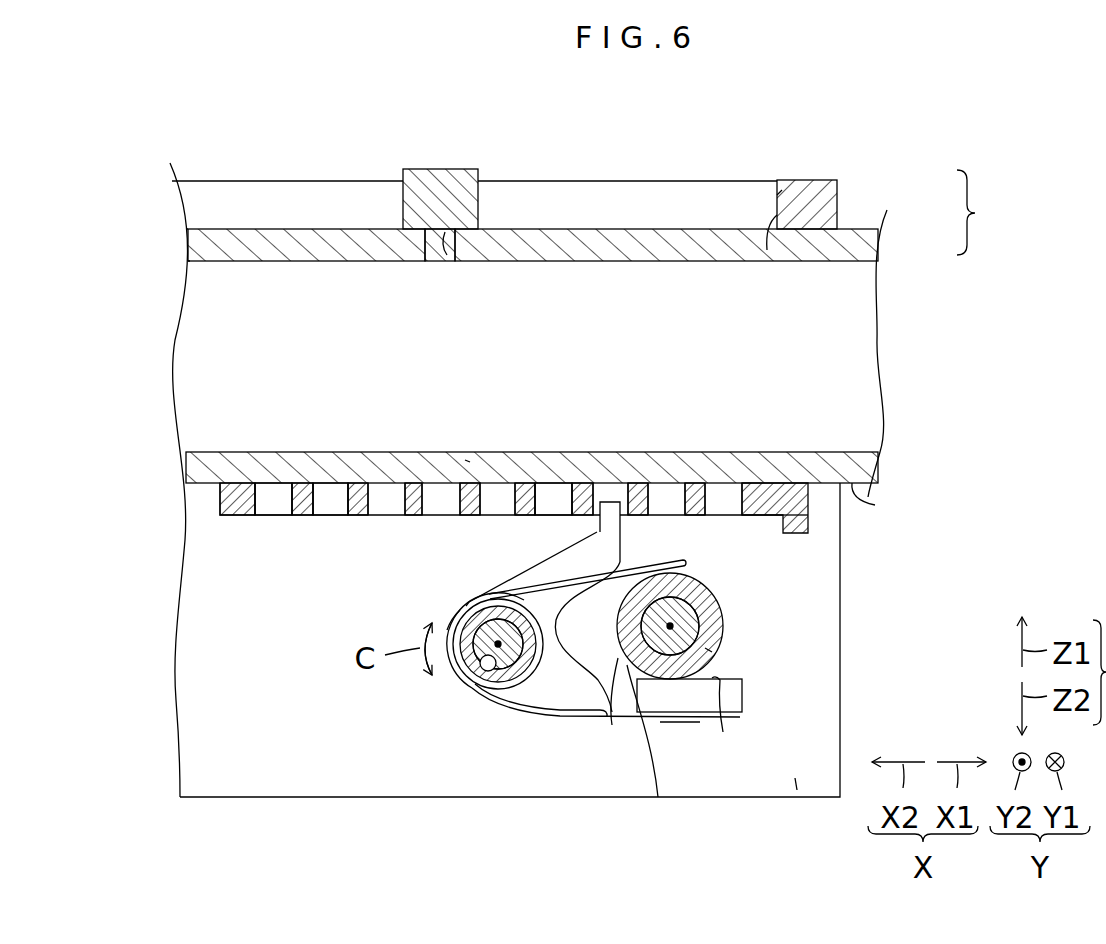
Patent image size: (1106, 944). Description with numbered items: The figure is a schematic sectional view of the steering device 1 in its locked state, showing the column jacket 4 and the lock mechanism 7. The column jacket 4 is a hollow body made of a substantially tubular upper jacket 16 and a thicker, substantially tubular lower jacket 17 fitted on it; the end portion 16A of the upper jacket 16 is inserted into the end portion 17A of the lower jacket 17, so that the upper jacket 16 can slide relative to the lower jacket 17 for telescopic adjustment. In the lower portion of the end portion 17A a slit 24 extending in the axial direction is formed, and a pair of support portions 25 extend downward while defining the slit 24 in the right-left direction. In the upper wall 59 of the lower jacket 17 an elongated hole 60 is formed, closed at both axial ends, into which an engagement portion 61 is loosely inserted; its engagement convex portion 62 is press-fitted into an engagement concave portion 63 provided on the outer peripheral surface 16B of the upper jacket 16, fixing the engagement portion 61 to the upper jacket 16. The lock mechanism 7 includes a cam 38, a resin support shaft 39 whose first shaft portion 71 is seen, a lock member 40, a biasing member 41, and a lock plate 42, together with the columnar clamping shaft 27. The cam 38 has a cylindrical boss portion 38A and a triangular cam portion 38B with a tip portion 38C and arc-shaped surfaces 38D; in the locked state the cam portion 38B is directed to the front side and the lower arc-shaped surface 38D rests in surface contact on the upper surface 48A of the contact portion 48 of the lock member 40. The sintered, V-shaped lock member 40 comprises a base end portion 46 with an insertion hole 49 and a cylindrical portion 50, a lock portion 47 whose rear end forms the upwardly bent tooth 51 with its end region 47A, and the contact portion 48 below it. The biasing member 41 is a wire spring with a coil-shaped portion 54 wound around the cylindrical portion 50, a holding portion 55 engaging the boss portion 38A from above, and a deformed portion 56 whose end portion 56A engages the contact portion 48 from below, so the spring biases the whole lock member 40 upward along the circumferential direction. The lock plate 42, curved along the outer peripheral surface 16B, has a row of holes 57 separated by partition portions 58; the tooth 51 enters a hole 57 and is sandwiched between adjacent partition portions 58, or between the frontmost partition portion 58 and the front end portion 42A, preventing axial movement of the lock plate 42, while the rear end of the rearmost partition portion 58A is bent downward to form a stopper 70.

The steering device 1 is at (563, 898).
The column jacket 4 is at (981, 212).
The lock mechanism 7 is at (675, 727).
The upper jacket 16 is at (845, 247).
The end portion of the upper jacket 16A is at (468, 460).
The outer peripheral surface of the upper jacket 16B is at (875, 505).
The lower jacket 17 is at (866, 177).
The end portion of the lower jacket 17A is at (805, 186).
The slit 24 is at (547, 670).
The support portion 25 is at (795, 778).
The clamping shaft 27 is at (690, 625).
The cam 38 is at (717, 625).
The boss portion 38A is at (710, 648).
The cam portion 38B is at (614, 720).
The tip portion 38C is at (585, 637).
The arc-shaped surface 38D is at (658, 797).
The support shaft 39 is at (435, 626).
The lock member 40 is at (442, 683).
The biasing member 41 is at (606, 764).
The lock plate 42 is at (574, 462).
The front end portion of the lock plate 42A is at (226, 517).
The base end portion 46 is at (470, 686).
The lock portion 47 is at (505, 564).
The arm end 47A is at (527, 585).
The contact portion 48 is at (724, 722).
The upper surface of the contact portion 48A is at (775, 698).
The insertion hole 49 is at (496, 670).
The cylindrical portion 50 is at (468, 666).
The tooth 51 is at (610, 503).
The coil-shaped portion 54 is at (450, 617).
The holding portion 55 is at (688, 567).
The deformed portion 56 is at (541, 764).
The end portion of the deformed portion 56A is at (602, 720).
The hole 57 is at (325, 497).
The partition portion 58 is at (415, 492).
The rearmost partition portion 58A is at (775, 520).
The upper wall 59 is at (205, 180).
The elongated hole 60 is at (767, 250).
The engagement portion 61 is at (469, 258).
The engagement convex portion 62 is at (437, 250).
The engagement concave portion 63 is at (443, 248).
The stopper 70 is at (805, 522).
The first shaft portion 71 is at (485, 640).